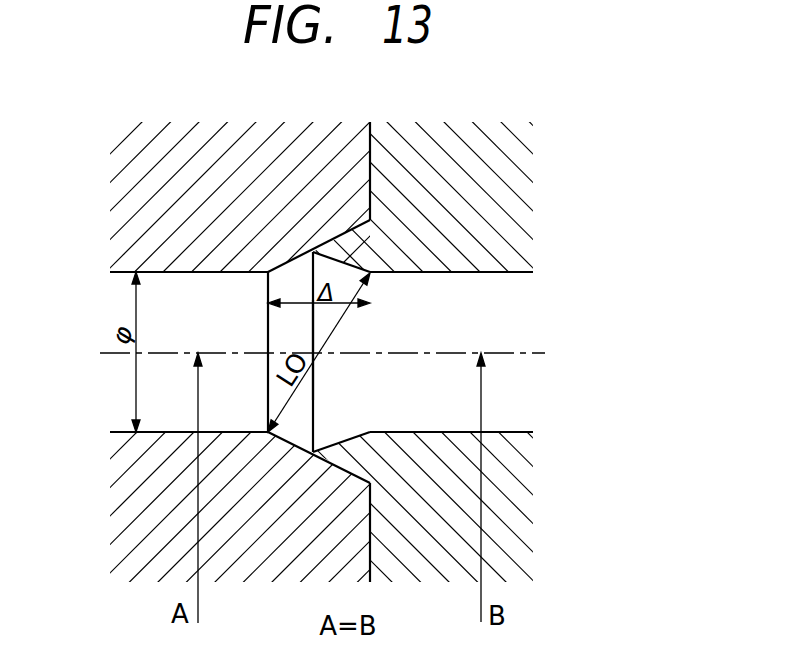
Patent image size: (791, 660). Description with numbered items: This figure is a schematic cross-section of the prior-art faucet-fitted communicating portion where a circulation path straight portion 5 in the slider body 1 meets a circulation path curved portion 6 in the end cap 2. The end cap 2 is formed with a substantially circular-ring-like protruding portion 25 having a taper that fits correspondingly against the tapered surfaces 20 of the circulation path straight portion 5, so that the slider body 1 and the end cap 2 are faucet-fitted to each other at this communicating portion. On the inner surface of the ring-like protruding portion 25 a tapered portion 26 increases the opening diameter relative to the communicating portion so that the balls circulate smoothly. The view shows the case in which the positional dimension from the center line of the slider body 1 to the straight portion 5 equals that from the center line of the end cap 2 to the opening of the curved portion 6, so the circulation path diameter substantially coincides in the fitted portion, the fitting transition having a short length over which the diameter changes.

The slider body 1 is at (143, 143).
The end cap 2 is at (523, 162).
The circulation path straight portion 5 is at (122, 300).
The circulation path curved portion 6 is at (512, 308).
The tapered surface 20 is at (312, 252).
The protruding portion 25 is at (363, 248).
The tapered portion 26 is at (365, 255).